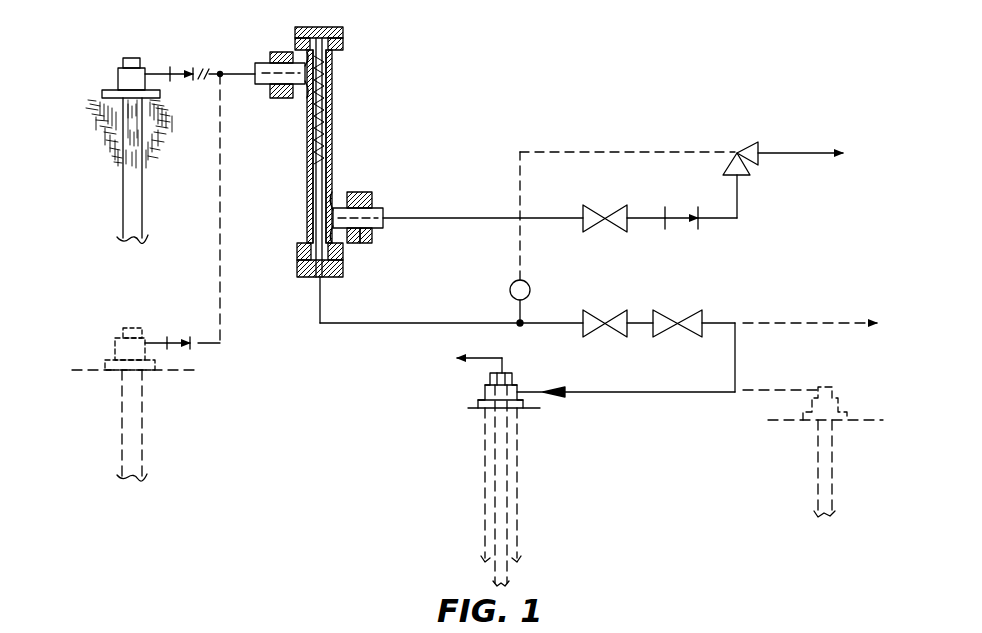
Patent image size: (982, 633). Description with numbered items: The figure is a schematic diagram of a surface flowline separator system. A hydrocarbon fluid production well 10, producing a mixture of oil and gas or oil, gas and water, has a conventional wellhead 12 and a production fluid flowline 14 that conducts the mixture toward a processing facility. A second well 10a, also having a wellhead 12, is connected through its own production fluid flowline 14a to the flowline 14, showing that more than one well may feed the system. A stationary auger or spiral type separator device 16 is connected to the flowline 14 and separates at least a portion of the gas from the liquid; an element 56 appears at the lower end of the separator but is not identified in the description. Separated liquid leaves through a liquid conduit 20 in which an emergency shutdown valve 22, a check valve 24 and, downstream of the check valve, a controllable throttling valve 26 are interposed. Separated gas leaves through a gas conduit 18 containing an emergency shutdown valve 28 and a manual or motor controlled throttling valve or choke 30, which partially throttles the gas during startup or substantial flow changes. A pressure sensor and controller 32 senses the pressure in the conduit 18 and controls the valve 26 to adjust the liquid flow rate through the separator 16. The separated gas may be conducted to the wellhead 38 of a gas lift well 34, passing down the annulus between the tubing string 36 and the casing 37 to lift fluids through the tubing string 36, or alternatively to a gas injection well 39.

The hydrocarbon fluid production well 10 is at (108, 60).
The wellhead 12 is at (140, 58).
The production fluid flowline 14 is at (160, 72).
The stationary auger or spiral type separator device 16 is at (338, 108).
The gas conduit 18 is at (362, 323).
The liquid conduit 20 is at (432, 218).
The emergency shutdown valve 22 is at (603, 232).
The check valve 24 is at (682, 228).
The controllable throttling valve 26 is at (745, 142).
The emergency shutdown valve 28 is at (600, 337).
The throttling valve or choke 30 is at (685, 337).
The pressure sensor and controller 32 is at (512, 283).
The gas lift well 34 is at (468, 378).
The tubing string 36 is at (507, 513).
The casing 37 is at (485, 495).
The wellhead 38 is at (465, 395).
The gas injection well 39 is at (840, 405).
The filter housing wall 56 is at (298, 258).
The second well 10a is at (128, 312).
The production fluid flowline 14a is at (210, 345).